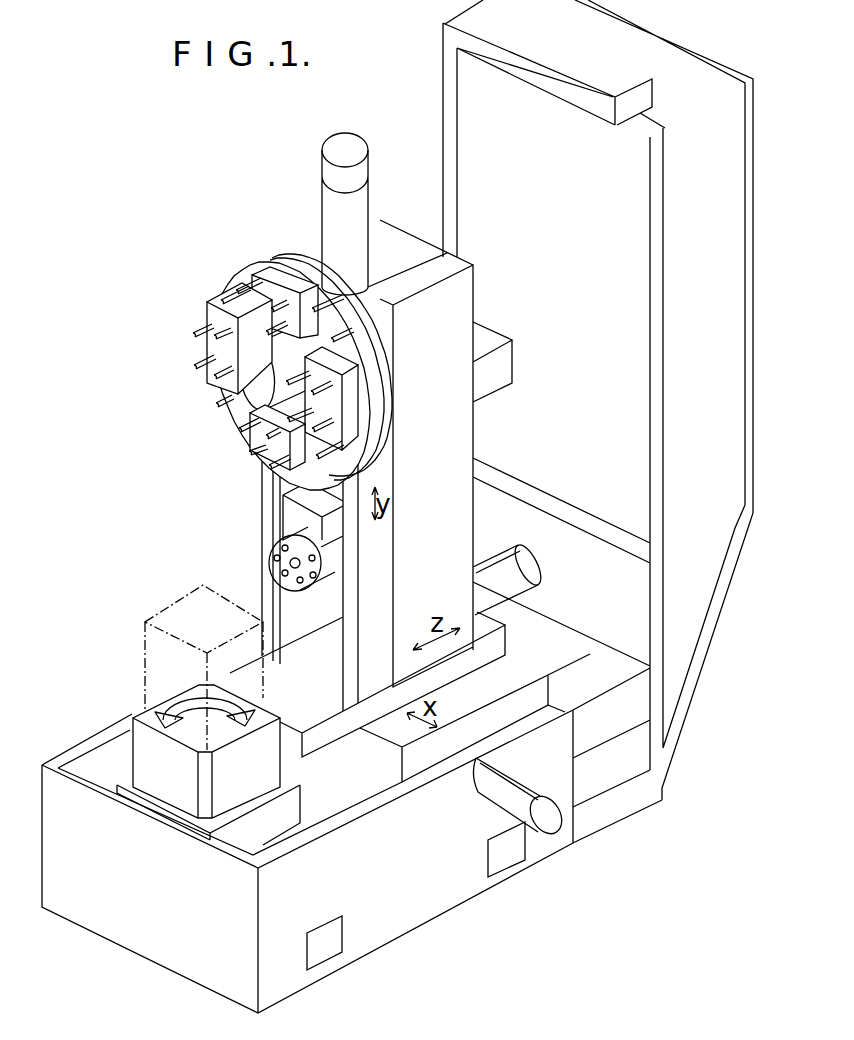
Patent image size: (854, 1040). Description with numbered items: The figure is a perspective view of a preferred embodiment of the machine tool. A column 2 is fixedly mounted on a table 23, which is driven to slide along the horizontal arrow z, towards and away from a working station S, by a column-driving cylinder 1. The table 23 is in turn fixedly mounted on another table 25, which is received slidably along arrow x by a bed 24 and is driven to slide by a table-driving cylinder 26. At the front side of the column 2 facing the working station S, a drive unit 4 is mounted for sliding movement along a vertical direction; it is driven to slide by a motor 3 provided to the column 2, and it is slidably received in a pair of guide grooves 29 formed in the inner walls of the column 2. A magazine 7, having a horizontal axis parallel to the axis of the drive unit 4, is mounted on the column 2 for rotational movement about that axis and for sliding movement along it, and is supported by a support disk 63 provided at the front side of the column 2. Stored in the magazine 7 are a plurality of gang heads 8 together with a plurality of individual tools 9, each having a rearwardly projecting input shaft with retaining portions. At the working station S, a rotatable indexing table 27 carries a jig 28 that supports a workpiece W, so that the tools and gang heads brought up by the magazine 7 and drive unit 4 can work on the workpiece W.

The column-driving cylinder 1 is at (514, 571).
The column 2 is at (462, 332).
The drive unit-driving motor 3 is at (357, 207).
The drive unit 4 is at (312, 538).
The magazine 7 is at (340, 366).
The gang heads 8 is at (270, 275).
The individual tools 9 is at (317, 300).
The table 23 is at (337, 668).
The bed 24 is at (453, 850).
The table 25 is at (500, 727).
The table-driving cylinder 26 is at (550, 785).
The rotatable indexing table 27 is at (250, 825).
The jig 28 is at (175, 780).
The guide grooves 29 is at (293, 617).
The support disk 63 is at (380, 372).
The workpiece W is at (190, 598).
The working station S is at (127, 677).